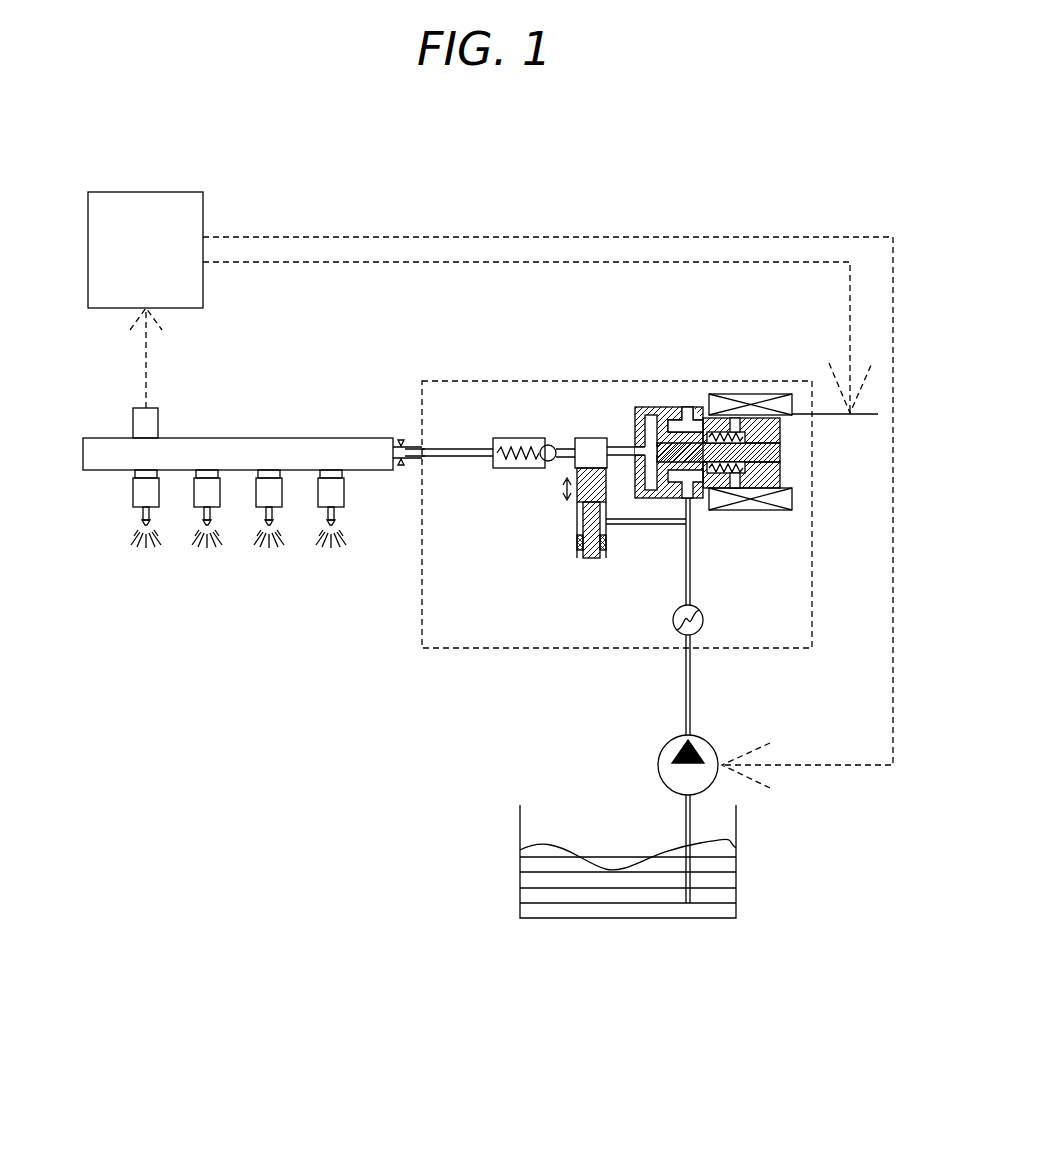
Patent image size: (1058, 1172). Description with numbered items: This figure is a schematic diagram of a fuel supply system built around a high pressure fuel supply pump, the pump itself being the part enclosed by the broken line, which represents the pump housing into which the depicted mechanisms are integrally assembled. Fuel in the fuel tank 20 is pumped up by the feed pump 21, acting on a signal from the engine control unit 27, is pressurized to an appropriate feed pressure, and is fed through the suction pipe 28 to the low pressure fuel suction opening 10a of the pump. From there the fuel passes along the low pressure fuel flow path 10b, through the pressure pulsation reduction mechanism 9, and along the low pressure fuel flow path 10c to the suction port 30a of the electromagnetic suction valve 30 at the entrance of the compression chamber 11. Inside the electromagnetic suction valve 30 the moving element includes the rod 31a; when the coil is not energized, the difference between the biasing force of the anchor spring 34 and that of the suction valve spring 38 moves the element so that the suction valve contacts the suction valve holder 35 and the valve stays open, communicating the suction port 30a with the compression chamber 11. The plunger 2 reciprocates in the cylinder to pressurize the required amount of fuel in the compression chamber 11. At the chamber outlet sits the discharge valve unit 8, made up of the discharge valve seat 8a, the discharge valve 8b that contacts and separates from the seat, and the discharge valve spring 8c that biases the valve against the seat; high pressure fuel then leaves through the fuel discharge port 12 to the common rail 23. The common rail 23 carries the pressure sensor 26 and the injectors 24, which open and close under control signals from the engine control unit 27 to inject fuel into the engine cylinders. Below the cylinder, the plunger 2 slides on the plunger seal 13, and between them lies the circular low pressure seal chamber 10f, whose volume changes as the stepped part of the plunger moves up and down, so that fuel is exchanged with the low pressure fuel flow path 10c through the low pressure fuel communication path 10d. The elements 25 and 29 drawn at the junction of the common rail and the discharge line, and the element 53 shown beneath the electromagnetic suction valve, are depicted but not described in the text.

The engine control unit 27 is at (143, 210).
The pressure sensor 26 is at (150, 420).
The common rail 23 is at (268, 445).
The injectors 24 is at (148, 494).
The connection portion 25 is at (400, 447).
The pipe joint 29 is at (412, 449).
The fuel discharge port 12 is at (460, 449).
The discharge valve unit 8 is at (586, 334).
The discharge valve spring 8c is at (522, 438).
The discharge valve 8b is at (548, 445).
The discharge valve seat 8a is at (566, 449).
The compression chamber 11 is at (590, 438).
The plunger 2 is at (575, 510).
The circular low pressure seal chamber 10f is at (577, 520).
The plunger seal 13 is at (590, 535).
The low pressure fuel communication path 10d is at (640, 524).
The rod 31a is at (658, 430).
The suction valve spring 38 is at (672, 428).
The suction port 30a is at (685, 408).
The anchor spring 34 is at (722, 433).
The suction valve holder 35 is at (782, 430).
The electromagnetic suction valve 30 is at (778, 390).
The coil 53 is at (792, 493).
The low pressure fuel flow path 10c is at (690, 555).
The pressure pulsation reduction mechanism 9 is at (690, 625).
The low pressure fuel flow path 10b is at (690, 640).
The low pressure fuel suction opening 10a is at (690, 650).
The suction pipe 28 is at (690, 693).
The feed pump 21 is at (695, 780).
The fuel tank 20 is at (632, 913).